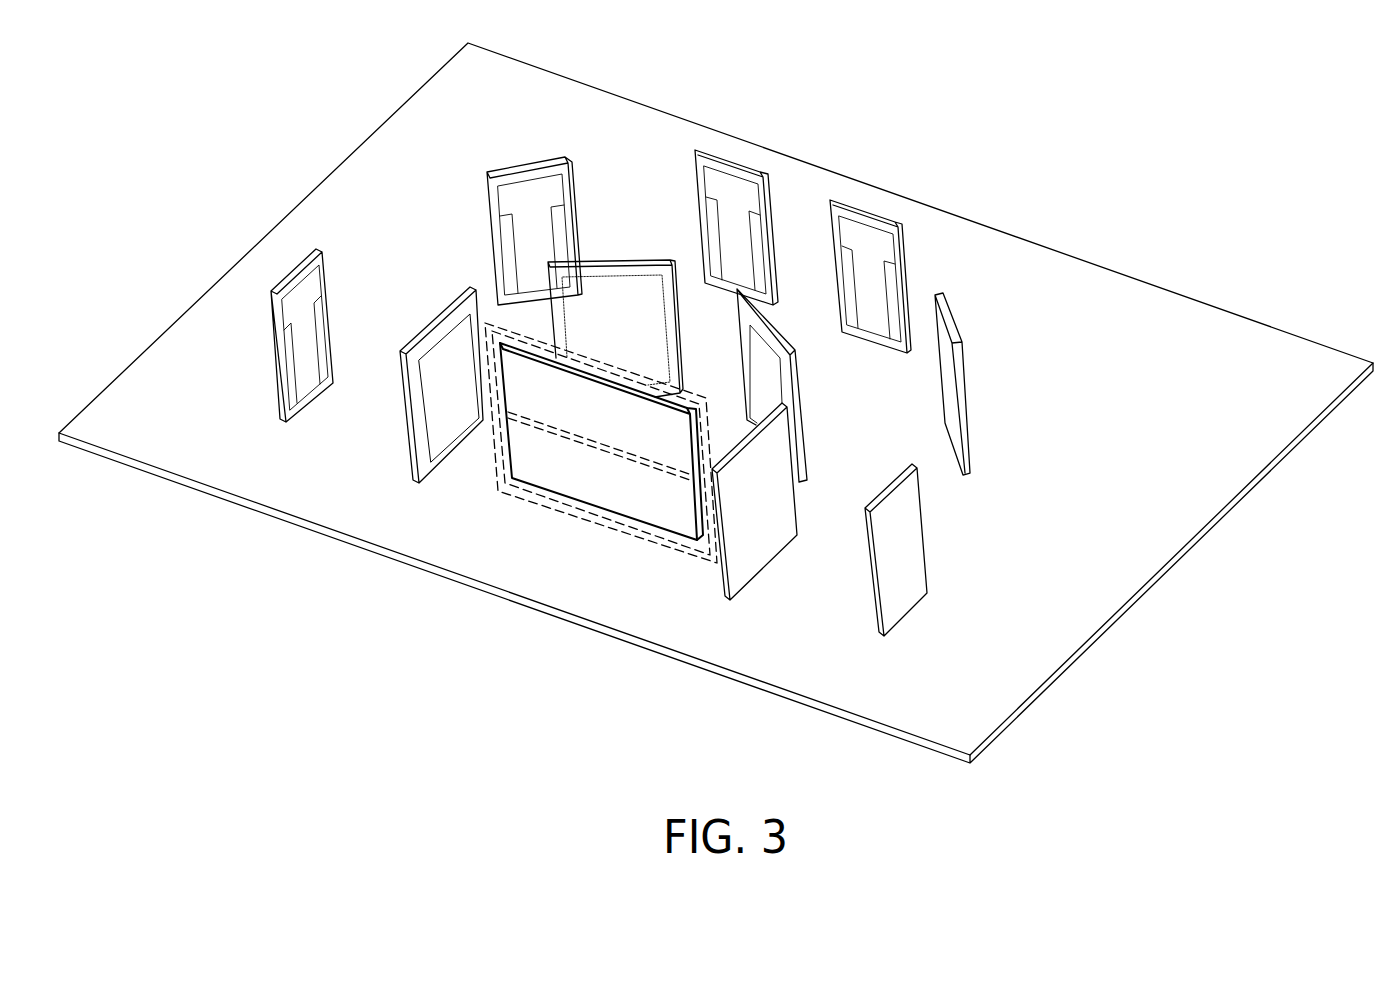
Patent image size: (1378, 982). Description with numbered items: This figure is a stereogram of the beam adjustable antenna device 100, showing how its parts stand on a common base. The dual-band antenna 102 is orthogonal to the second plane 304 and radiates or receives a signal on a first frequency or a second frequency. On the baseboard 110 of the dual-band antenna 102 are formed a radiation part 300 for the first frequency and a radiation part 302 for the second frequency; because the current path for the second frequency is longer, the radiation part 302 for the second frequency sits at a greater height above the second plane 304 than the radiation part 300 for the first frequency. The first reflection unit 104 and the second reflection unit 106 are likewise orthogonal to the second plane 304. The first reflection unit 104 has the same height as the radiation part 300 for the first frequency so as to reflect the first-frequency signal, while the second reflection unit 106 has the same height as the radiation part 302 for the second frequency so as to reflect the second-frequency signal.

The beam adjustable antenna device 100 is at (505, 118).
The dual-band antenna 102 is at (550, 441).
The baseboard 110 is at (538, 503).
The first reflection unit 104 is at (405, 416).
The second reflection unit 106 is at (270, 356).
The radiation part for the first frequency 300 is at (622, 530).
The radiation part for the second frequency 302 is at (598, 367).
The second plane 304 is at (1128, 558).